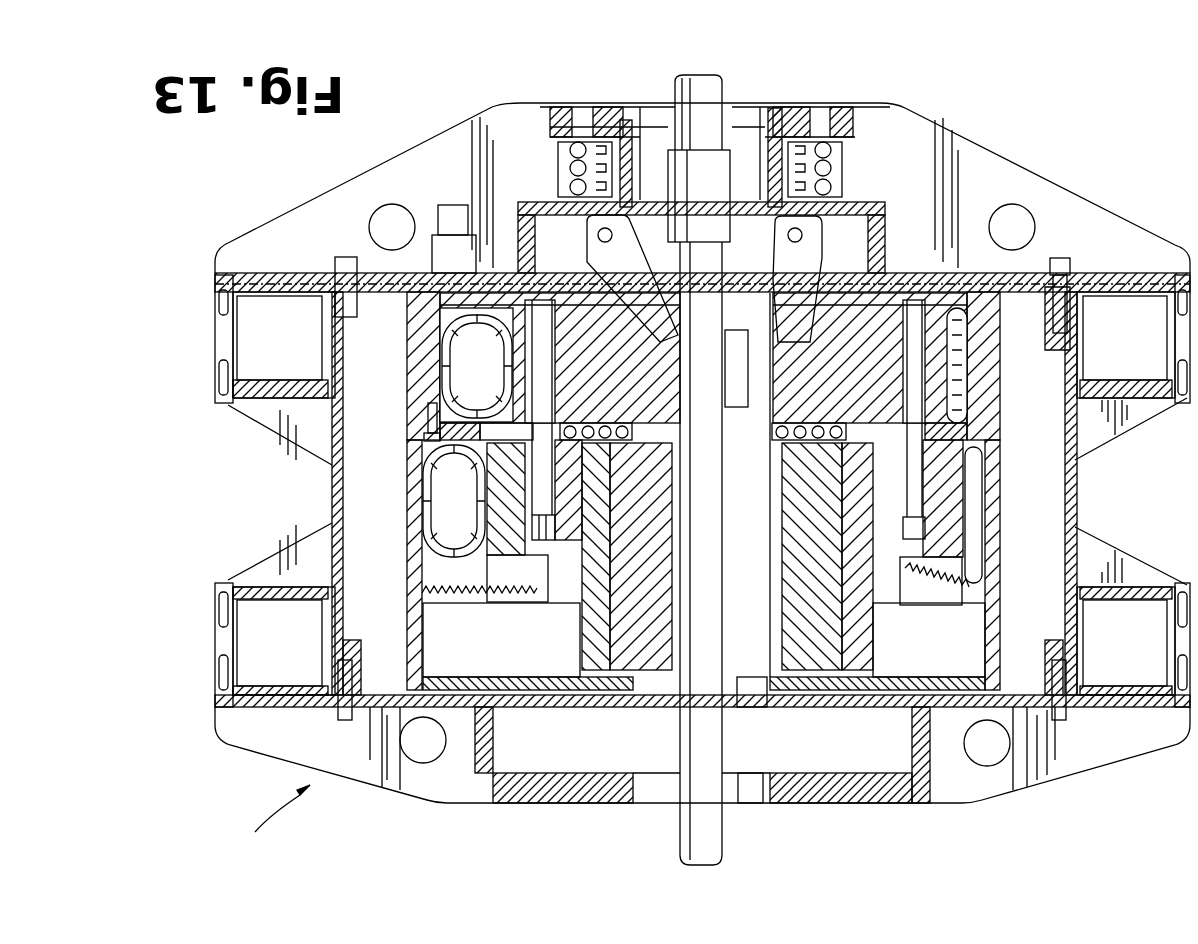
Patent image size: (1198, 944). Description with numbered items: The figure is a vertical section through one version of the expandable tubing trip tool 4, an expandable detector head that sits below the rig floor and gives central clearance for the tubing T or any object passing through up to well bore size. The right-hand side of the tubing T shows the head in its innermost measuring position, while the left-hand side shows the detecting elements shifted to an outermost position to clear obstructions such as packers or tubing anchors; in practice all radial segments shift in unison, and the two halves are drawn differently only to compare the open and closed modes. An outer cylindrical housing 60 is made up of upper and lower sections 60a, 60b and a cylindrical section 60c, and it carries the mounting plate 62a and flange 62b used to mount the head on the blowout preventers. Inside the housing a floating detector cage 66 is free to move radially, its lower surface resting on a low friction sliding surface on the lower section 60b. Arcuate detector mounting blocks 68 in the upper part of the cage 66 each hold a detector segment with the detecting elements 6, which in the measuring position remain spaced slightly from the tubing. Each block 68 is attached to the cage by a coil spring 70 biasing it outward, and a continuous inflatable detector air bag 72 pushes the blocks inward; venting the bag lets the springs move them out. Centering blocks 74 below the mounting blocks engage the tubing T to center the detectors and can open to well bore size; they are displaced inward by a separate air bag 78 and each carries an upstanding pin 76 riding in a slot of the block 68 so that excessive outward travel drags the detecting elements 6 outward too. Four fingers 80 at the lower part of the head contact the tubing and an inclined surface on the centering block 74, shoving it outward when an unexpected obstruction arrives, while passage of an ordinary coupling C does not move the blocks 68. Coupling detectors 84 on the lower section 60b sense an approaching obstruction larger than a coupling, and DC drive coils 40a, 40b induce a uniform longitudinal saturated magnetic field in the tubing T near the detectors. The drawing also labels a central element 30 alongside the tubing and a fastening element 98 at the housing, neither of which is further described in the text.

The expandable tubing trip tool 4 is at (273, 819).
The detecting elements 6 is at (800, 565).
The spline sleeve 30 is at (760, 455).
The DC drive coil 40a is at (240, 630).
The DC drive coil 40b is at (240, 320).
The outer cylindrical housing 60 is at (332, 490).
The upper housing section 60a is at (245, 725).
The lower housing section 60b is at (330, 205).
The cylindrical section 60c is at (325, 428).
The mounting plate 62a is at (822, 812).
The flange 62b is at (565, 120).
The floating detector cage 66 is at (1000, 605).
The detector mounting blocks 68 is at (570, 635).
The coil spring 70 is at (937, 605).
The inflatable detector air bag 72 is at (412, 518).
The centering blocks 74 is at (655, 415).
The upstanding pin 76 is at (550, 490).
The air bag 78 is at (410, 365).
The fingers 80 is at (690, 285).
The coupling detectors 84 is at (552, 158).
The screw 98 is at (1010, 298).
The coupling C is at (676, 130).
The tubing T is at (677, 845).